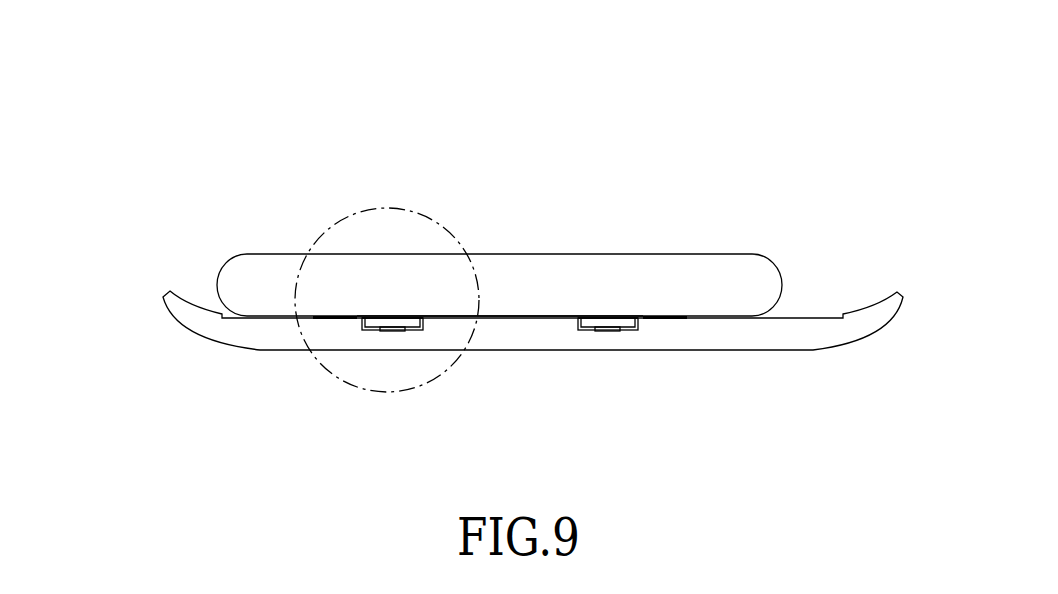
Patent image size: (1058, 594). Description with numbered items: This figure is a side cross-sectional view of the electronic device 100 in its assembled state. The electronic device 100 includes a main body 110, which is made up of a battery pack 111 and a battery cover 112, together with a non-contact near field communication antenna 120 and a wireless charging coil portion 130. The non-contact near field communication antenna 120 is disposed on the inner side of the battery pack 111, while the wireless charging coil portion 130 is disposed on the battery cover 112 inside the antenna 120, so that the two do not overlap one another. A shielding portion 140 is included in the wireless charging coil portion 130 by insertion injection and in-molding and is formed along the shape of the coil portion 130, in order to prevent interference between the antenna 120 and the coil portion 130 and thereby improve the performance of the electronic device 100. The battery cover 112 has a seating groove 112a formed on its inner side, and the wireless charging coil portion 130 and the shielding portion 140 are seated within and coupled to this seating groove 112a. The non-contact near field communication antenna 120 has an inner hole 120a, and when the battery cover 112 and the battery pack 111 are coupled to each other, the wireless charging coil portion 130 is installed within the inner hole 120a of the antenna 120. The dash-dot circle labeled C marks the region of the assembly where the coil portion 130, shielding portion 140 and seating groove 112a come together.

The electronic device 100 is at (793, 132).
The main body 110 is at (133, 212).
The battery pack 111 is at (236, 268).
The battery cover 112 is at (184, 308).
The seating groove 112a is at (409, 331).
The non-contact near field communication antenna 120 is at (332, 315).
The inner hole 120a is at (511, 315).
The wireless charging coil portion 130 is at (390, 331).
The shielding portion 140 is at (365, 331).
The enlarged region C is at (427, 215).